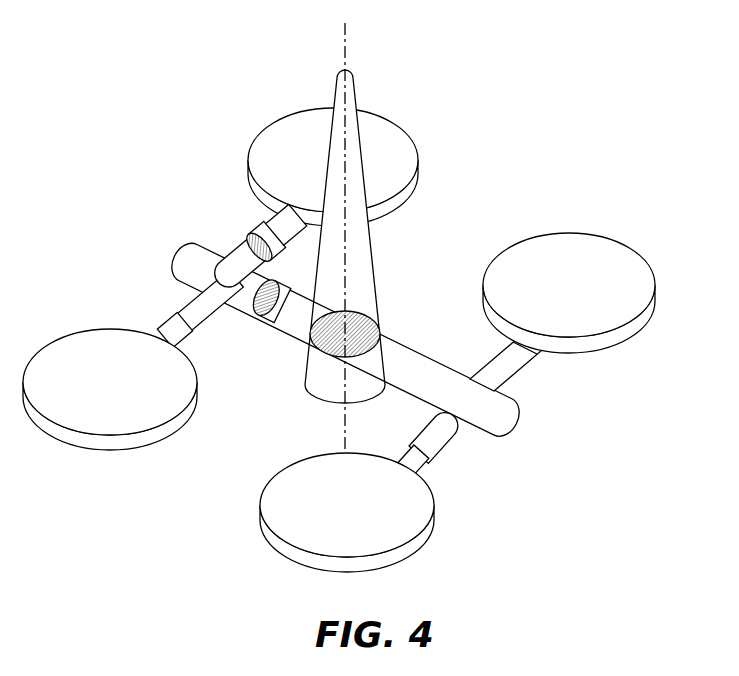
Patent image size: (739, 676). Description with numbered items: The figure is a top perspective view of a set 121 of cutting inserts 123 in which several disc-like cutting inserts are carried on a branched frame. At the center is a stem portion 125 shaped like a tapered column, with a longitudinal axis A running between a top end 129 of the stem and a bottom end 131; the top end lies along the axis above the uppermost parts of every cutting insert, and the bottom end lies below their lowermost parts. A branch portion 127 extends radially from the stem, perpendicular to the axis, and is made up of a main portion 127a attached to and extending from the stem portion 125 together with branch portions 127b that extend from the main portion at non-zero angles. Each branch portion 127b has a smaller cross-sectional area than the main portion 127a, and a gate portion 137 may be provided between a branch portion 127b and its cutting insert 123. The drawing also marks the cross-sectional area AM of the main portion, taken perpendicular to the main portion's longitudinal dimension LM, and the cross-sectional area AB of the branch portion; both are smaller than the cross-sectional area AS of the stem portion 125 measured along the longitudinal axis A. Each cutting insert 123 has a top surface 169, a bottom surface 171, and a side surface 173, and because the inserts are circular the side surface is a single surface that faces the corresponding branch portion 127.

The set of cutting inserts 121 is at (599, 158).
The cutting insert 123 is at (568, 252).
The stem portion 125 is at (377, 290).
The branch portion 127 is at (194, 241).
The main portion 127a is at (402, 361).
The branch portion 127b is at (427, 441).
The top end 129 is at (353, 143).
The bottom end 131 is at (321, 393).
The gate portion 137 is at (163, 323).
The top surface 169 is at (633, 276).
The bottom surface 171 is at (601, 351).
The side surface 173 is at (653, 320).
The longitudinal axis A is at (347, 48).
The cross-sectional area of the branch portion AB is at (263, 226).
The cross-sectional area of the main portion AM is at (272, 283).
The cross-sectional area of the stem portion AS is at (365, 322).
The longitudinal dimension of the main portion LM is at (232, 302).